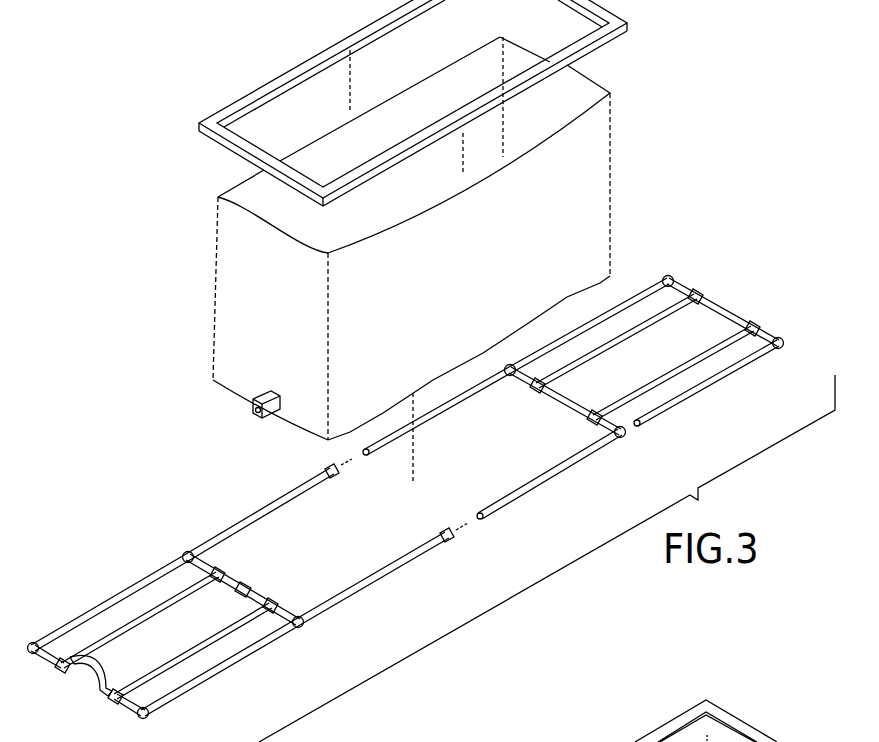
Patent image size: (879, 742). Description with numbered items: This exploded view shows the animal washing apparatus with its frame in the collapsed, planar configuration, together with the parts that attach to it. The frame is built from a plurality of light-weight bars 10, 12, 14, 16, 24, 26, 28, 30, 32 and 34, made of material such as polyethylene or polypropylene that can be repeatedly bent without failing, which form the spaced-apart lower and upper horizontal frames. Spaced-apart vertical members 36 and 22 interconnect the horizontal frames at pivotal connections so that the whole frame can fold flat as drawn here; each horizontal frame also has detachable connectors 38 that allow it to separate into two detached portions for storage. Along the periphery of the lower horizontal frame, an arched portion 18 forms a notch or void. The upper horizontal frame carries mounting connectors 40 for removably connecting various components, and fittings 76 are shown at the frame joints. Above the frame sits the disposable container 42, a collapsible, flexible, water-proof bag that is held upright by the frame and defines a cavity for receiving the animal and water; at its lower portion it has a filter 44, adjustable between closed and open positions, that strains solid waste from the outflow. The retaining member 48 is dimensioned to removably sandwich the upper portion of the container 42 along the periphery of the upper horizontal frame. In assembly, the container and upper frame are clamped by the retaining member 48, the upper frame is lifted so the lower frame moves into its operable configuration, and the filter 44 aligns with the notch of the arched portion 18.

The bar 10 is at (273, 508).
The bar 12 is at (372, 582).
The bar 14 is at (142, 582).
The bar 16 is at (242, 658).
The arched portion 18 is at (88, 663).
The vertical member 22 is at (200, 648).
The bar 24 is at (422, 418).
The bar 26 is at (525, 483).
The bar 28 is at (573, 332).
The bar 30 is at (698, 395).
The bar 32 is at (565, 402).
The bar 34 is at (723, 310).
The vertical member 36 is at (690, 363).
The detachable connector 38 is at (335, 475).
The mounting connector 40 is at (243, 575).
The disposable container 42 is at (605, 220).
The filter 44 is at (270, 420).
The retaining member 48 is at (258, 90).
The T-fitting 76 is at (597, 417).